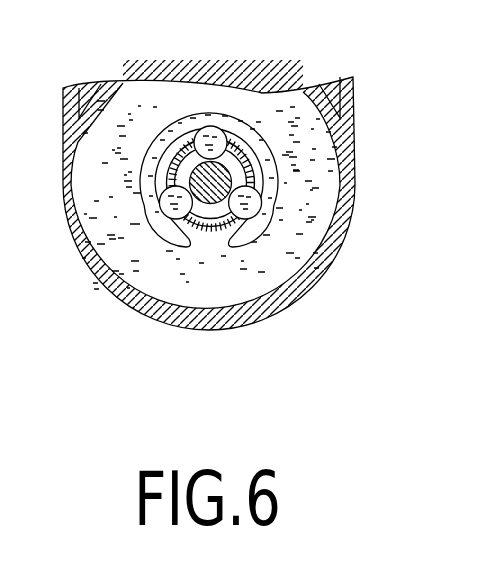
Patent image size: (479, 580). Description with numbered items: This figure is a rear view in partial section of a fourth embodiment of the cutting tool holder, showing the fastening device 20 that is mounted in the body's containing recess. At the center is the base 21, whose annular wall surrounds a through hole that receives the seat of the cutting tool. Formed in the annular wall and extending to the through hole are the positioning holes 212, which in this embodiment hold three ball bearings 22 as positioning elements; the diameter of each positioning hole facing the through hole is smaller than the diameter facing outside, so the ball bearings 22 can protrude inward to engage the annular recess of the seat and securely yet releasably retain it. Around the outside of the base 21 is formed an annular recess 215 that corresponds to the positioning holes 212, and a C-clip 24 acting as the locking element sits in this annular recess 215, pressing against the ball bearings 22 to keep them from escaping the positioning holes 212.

The fastening device 20 is at (234, 160).
The C-clip 24 is at (190, 134).
The ball bearings 22 is at (211, 128).
The positioning holes 212 is at (252, 192).
The annular recess 215 is at (210, 230).
The base 21 is at (281, 276).